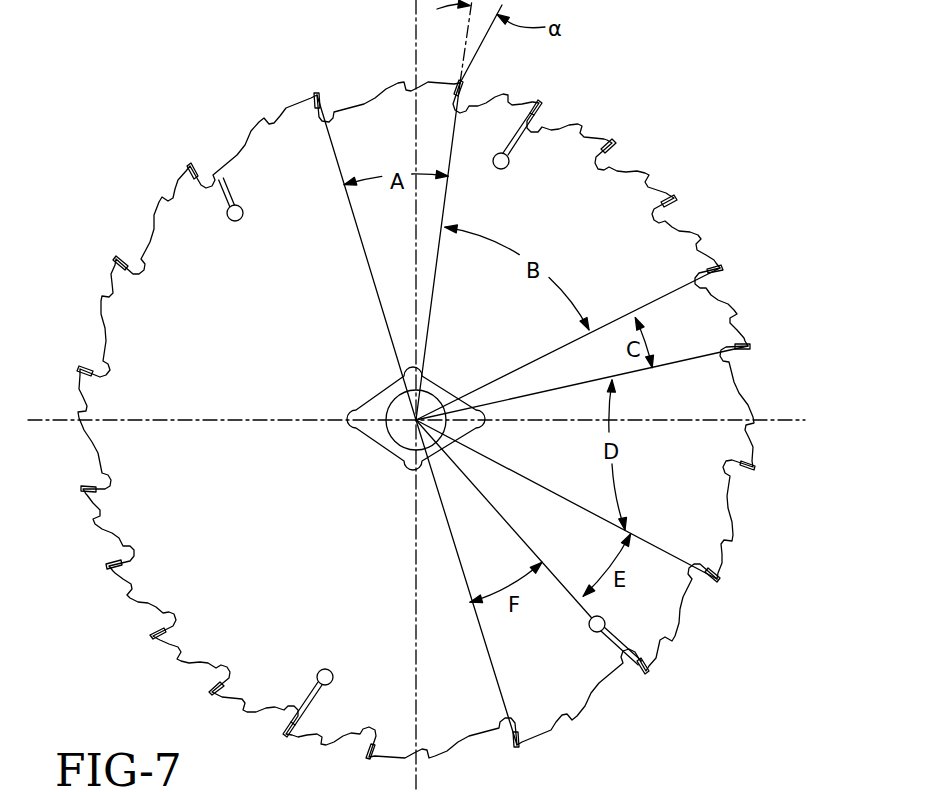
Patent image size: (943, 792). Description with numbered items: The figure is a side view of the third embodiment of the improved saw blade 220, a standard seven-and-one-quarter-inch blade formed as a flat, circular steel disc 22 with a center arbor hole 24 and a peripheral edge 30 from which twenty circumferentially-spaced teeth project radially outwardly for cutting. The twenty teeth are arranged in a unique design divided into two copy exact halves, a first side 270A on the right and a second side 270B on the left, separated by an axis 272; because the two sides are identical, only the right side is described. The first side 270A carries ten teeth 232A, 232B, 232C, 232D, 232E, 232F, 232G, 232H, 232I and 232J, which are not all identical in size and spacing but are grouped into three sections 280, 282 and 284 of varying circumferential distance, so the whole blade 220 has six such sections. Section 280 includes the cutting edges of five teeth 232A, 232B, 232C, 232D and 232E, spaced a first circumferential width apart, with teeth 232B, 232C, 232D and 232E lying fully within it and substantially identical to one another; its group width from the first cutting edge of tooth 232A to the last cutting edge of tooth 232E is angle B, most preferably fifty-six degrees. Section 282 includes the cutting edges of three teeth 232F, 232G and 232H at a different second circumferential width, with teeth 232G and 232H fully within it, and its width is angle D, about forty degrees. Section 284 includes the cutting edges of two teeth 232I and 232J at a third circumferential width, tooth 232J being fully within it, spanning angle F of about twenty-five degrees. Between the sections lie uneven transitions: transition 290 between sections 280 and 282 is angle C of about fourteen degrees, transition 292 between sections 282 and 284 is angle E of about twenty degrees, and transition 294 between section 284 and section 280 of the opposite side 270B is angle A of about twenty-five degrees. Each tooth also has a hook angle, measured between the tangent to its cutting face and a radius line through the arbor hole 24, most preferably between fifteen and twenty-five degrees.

The saw blade 220 is at (394, 394).
The disc 22 is at (152, 352).
The peripheral edge 30 is at (142, 247).
The center arbor hole 24 is at (398, 407).
The first side 270A is at (662, 258).
The second side 270B is at (268, 154).
The axis 272 is at (420, 780).
The section 280 is at (603, 233).
The section 282 is at (693, 495).
The section 284 is at (568, 668).
The transition 290 is at (713, 341).
The transition 292 is at (668, 623).
The transition 294 is at (398, 152).
The tooth 232A is at (459, 78).
The tooth 232B is at (540, 103).
The tooth 232C is at (612, 143).
The tooth 232D is at (674, 200).
The tooth 232E is at (718, 272).
The tooth 232F is at (750, 348).
The tooth 232G is at (757, 470).
The tooth 232H is at (720, 582).
The tooth 232I is at (646, 674).
The tooth 232J is at (516, 748).